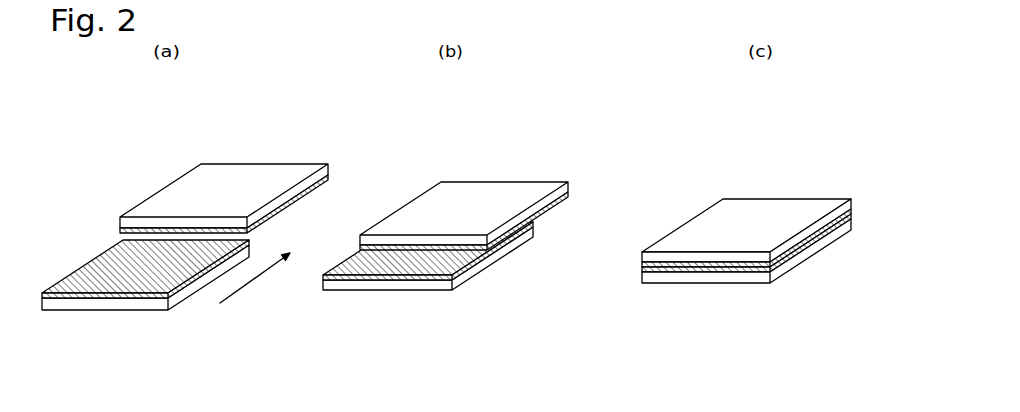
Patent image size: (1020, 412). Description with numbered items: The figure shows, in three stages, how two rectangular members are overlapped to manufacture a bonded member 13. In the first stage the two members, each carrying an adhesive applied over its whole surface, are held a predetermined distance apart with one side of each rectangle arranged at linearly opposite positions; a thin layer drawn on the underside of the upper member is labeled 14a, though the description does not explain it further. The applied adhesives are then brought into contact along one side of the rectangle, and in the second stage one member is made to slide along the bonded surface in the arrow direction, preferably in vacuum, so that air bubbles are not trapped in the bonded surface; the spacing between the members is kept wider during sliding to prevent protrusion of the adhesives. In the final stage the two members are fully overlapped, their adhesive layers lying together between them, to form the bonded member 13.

The thin layer on first substrate 14a is at (285, 205).
The bonded member 13 is at (740, 182).